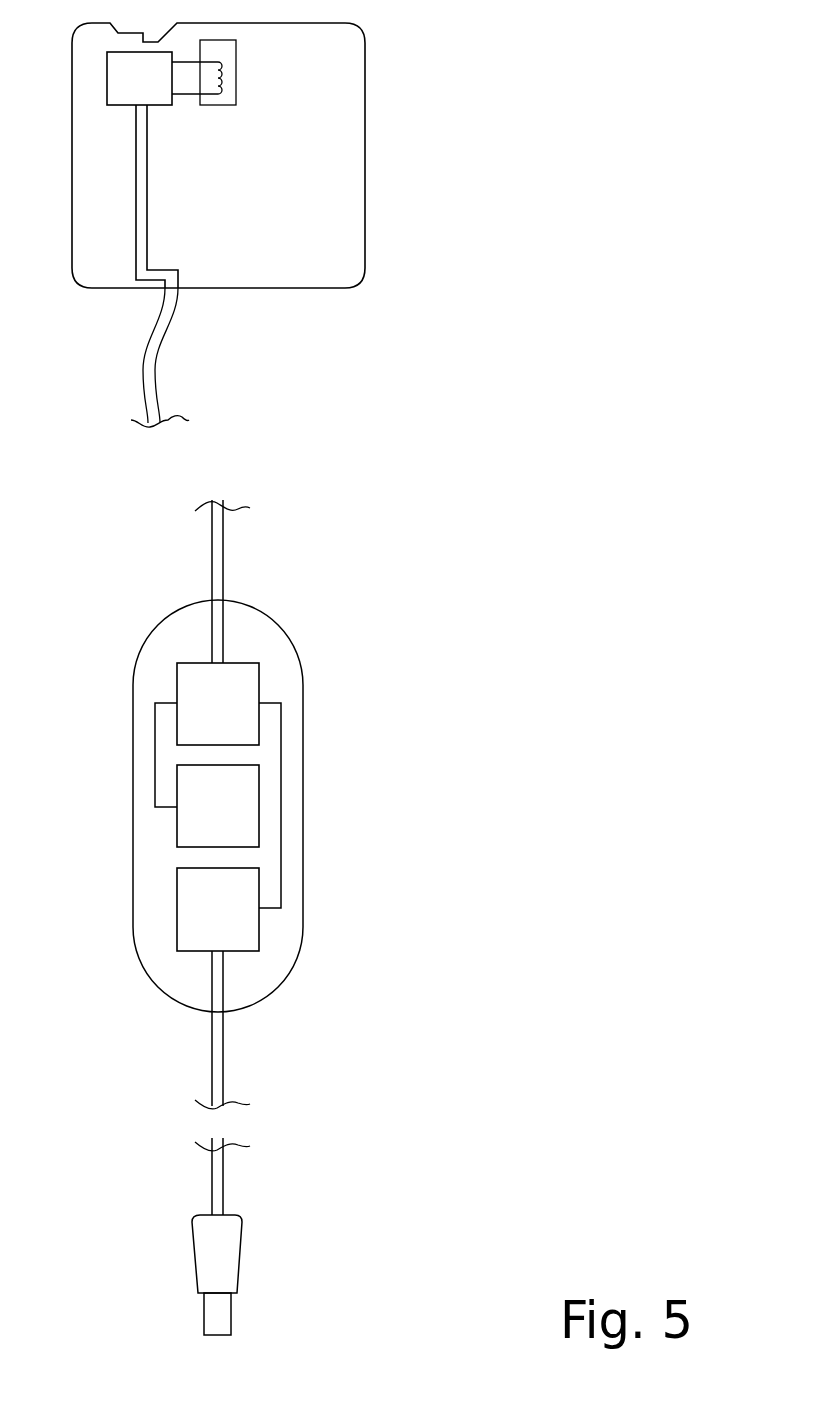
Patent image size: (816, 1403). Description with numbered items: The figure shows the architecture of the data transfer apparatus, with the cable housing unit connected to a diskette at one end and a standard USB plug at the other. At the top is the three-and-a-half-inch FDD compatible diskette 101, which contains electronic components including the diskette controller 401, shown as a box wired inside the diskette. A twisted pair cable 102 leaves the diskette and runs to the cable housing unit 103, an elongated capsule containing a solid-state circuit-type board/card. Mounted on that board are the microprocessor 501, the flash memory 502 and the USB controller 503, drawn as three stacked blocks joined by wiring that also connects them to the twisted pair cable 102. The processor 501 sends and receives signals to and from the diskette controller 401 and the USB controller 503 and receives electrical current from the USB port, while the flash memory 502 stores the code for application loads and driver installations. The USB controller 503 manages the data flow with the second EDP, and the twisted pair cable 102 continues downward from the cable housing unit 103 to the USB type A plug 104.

The FDD compatible diskette 101 is at (390, 158).
The twisted pair cable 102 is at (170, 351).
The cable housing unit 103 is at (348, 807).
The USB type A plug 104 is at (148, 1257).
The diskette controller 401 is at (139, 78).
The microprocessor 501 is at (218, 704).
The flash memory 502 is at (218, 806).
The USB controller 503 is at (218, 909).